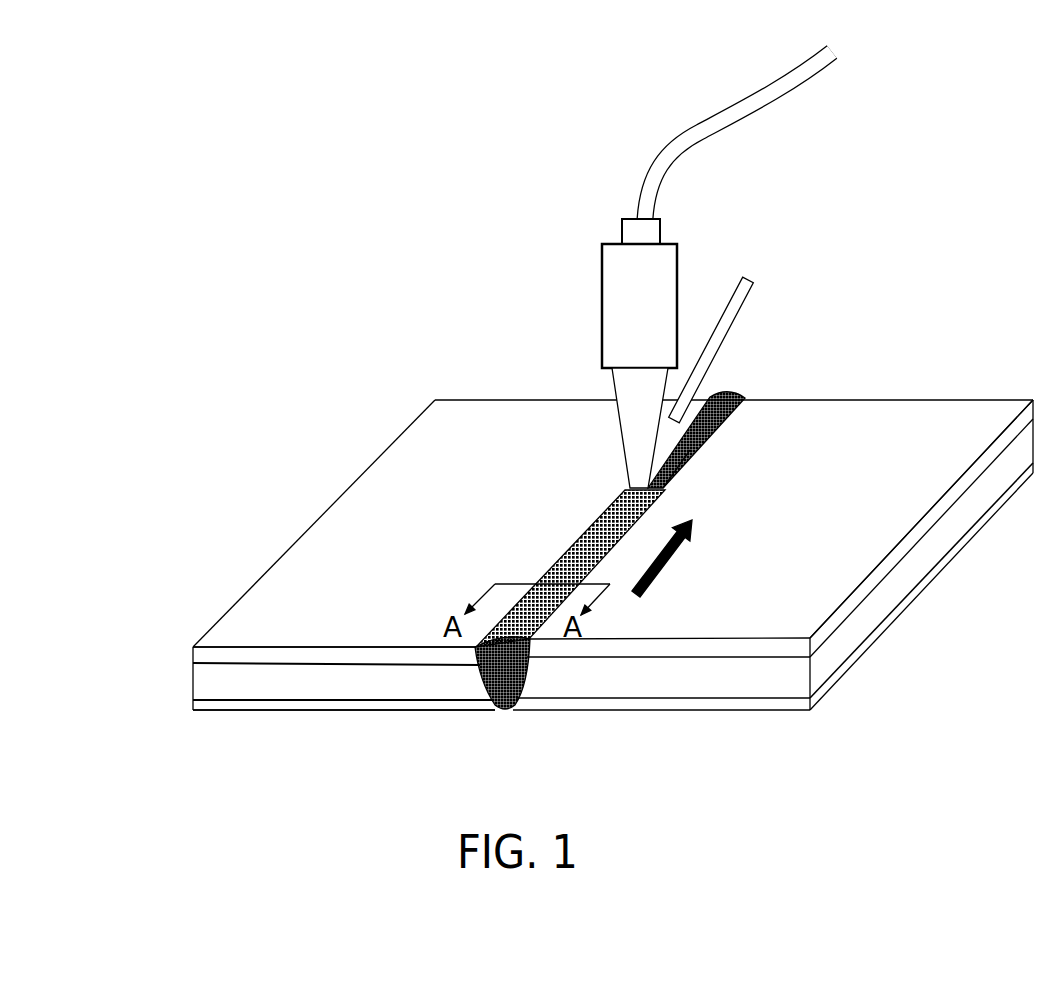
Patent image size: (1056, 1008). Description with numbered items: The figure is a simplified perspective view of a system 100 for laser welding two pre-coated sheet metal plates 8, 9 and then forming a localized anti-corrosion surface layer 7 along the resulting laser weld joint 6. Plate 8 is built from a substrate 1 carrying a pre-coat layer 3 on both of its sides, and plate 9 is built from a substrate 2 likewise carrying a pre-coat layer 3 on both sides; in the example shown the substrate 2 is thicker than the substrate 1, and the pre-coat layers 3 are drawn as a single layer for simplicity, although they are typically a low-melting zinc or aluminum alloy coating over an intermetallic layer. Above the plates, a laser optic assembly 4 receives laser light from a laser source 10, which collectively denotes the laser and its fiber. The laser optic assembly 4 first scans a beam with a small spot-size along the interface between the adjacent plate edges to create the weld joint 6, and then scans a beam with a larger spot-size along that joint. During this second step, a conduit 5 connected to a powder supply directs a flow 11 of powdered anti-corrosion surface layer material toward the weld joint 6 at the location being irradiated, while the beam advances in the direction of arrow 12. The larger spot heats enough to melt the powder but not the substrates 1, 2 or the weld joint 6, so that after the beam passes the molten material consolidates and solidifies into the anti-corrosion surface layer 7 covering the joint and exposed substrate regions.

The system 100 is at (945, 232).
The substrate 1 is at (313, 677).
The substrate 2 is at (840, 635).
The pre-coat layer 3 is at (243, 650).
The laser optic assembly 4 is at (600, 320).
The conduit 5 is at (743, 293).
The laser weld joint 6 is at (740, 392).
The anti-corrosion surface layer 7 is at (572, 577).
The pre-coated sheet metal plate 8 is at (392, 508).
The pre-coated sheet metal plate 9 is at (873, 508).
The laser source 10 is at (690, 130).
The flow of powdered anti-corrosion surface layer material 11 is at (710, 437).
The arrow 12 is at (657, 573).